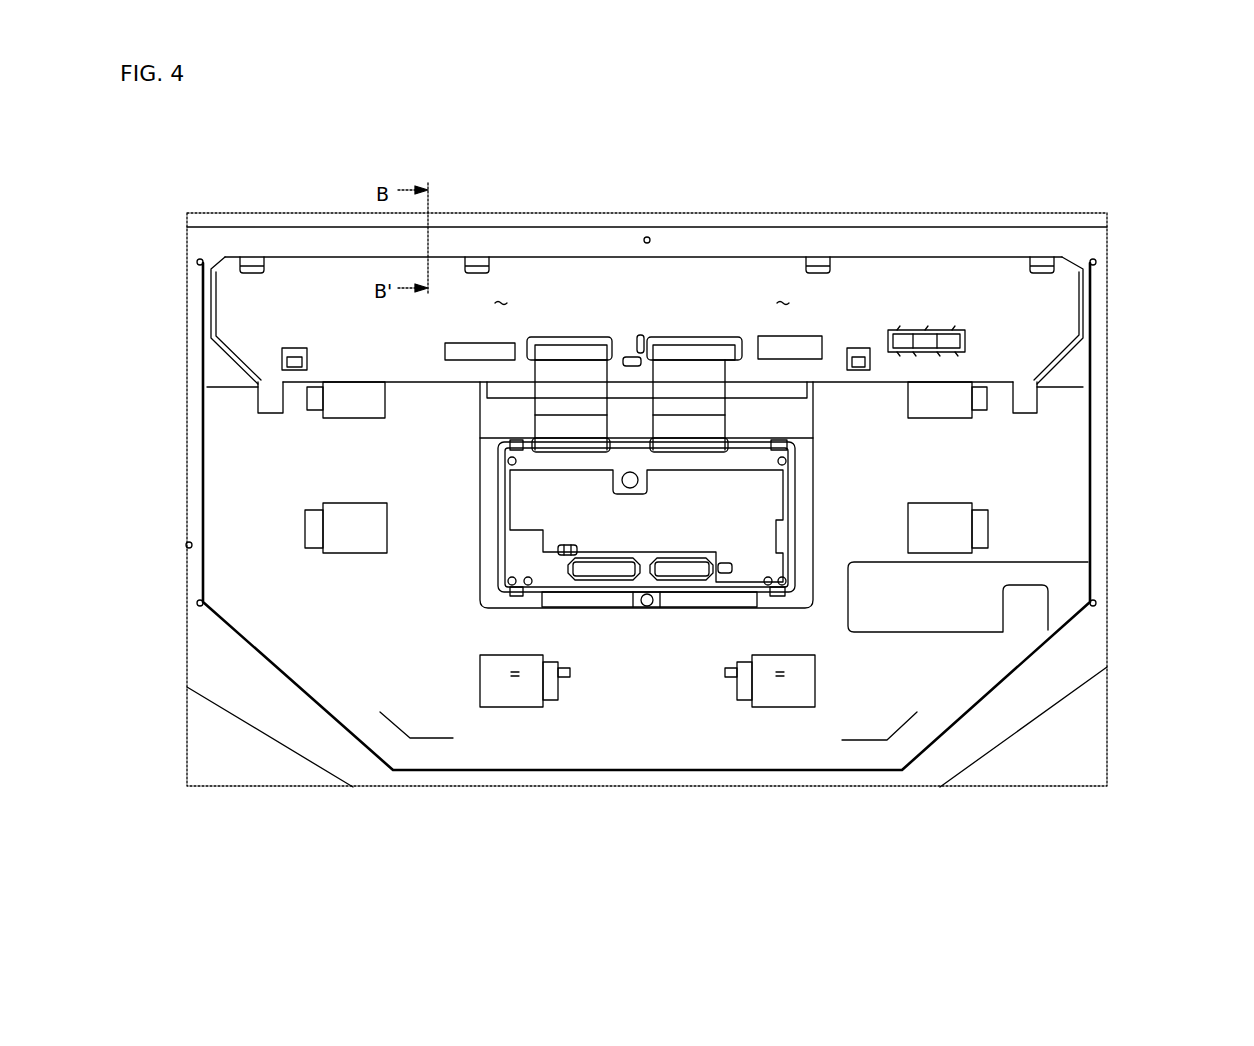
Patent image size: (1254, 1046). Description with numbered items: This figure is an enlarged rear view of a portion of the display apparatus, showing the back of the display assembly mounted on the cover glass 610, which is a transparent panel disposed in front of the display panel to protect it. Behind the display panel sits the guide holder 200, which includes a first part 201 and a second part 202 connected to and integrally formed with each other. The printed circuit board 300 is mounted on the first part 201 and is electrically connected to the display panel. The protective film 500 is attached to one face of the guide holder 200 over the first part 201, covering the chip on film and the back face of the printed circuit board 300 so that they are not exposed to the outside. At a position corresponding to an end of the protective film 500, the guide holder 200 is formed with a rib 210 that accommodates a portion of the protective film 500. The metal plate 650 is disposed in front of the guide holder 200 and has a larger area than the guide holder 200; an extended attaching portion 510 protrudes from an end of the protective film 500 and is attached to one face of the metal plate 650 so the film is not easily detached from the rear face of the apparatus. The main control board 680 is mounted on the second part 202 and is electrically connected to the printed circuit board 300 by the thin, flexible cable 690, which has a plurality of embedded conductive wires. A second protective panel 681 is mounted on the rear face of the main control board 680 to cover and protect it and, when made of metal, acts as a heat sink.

The guide holder 200 is at (743, 151).
The first part 201 is at (668, 288).
The second part 202 is at (750, 412).
The rib 210 is at (252, 257).
The printed circuit board 300 is at (828, 347).
The protective film 500 is at (237, 308).
The extended attaching portion 510 is at (266, 400).
The cover glass 610 is at (261, 700).
The metal plate 650 is at (345, 685).
The main control board 680 is at (607, 575).
The second protective panel 681 is at (690, 527).
The cable 690 is at (677, 372).